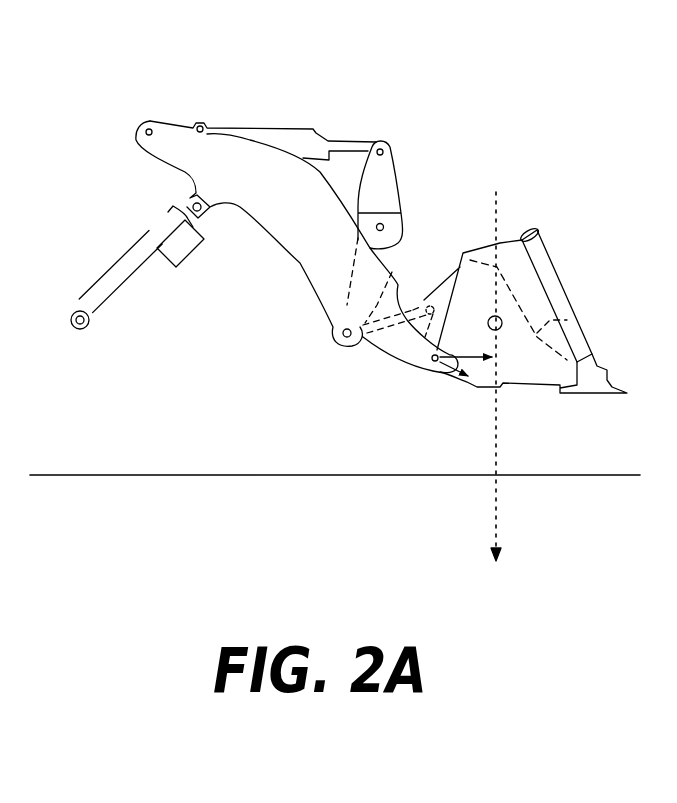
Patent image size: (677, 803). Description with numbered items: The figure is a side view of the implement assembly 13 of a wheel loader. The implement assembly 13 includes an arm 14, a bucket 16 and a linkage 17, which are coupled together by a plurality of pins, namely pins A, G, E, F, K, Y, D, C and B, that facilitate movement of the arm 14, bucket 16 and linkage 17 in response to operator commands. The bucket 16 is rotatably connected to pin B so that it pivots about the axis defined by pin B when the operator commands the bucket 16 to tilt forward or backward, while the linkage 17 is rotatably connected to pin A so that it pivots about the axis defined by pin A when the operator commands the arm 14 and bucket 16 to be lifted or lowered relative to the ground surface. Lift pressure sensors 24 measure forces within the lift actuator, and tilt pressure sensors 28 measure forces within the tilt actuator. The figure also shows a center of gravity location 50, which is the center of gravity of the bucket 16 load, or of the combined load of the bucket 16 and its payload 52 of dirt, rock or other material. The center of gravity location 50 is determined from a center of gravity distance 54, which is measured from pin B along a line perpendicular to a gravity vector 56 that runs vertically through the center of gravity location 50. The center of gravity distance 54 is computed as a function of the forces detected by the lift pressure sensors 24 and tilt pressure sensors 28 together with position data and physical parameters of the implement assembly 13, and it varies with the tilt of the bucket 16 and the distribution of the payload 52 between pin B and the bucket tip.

The implement assembly 13 is at (503, 64).
The arm 14 is at (278, 258).
The bucket 16 is at (558, 272).
The linkage 17 is at (396, 130).
The lift pressure sensor 24 is at (123, 303).
The tilt pressure sensor 28 is at (258, 127).
The center of gravity location 50 is at (497, 316).
The payload 52 is at (538, 337).
The center of gravity distance 54 is at (460, 378).
The gravity vector 56 is at (497, 190).
The pin A is at (146, 124).
The pin G is at (198, 122).
The pin E is at (378, 138).
The pin F is at (386, 224).
The pin K is at (183, 203).
The pin Y is at (78, 312).
The pin D is at (336, 331).
The pin C is at (428, 301).
The pin B is at (431, 363).